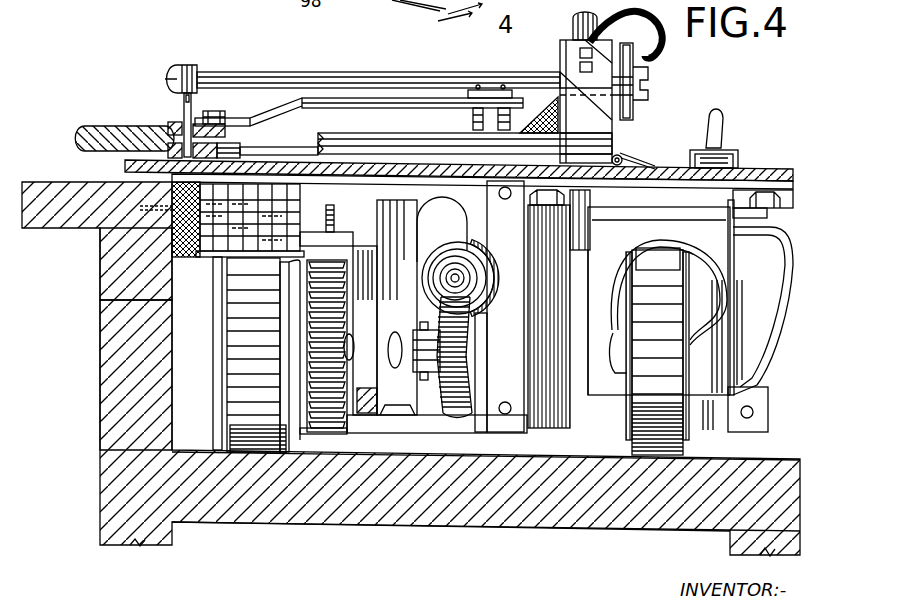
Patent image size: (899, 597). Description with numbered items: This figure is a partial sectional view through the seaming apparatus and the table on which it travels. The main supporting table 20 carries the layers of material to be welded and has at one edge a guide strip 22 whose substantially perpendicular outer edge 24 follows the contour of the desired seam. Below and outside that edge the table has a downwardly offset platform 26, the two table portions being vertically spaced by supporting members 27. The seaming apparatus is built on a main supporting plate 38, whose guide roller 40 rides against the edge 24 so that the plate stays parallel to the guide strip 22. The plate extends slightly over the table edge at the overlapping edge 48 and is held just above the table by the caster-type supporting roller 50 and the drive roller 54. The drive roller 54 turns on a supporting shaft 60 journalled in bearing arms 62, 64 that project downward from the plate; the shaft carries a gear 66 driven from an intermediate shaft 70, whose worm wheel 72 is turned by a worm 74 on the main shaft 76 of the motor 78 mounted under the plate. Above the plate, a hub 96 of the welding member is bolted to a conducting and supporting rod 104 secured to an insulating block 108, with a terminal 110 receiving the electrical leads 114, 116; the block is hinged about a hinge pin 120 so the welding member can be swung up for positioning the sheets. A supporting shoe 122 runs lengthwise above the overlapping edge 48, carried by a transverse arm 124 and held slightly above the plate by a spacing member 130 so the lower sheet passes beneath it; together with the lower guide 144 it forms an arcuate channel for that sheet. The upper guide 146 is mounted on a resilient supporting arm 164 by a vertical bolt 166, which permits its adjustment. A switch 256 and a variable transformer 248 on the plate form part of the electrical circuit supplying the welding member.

The main supporting table 20 is at (30, 183).
The guide strip 22 is at (108, 247).
The outer edge 24 is at (208, 262).
The downwardly offset platform 26 is at (222, 452).
The supporting members 27 is at (108, 335).
The main supporting plate 38 is at (756, 169).
The guide roller 40 is at (222, 262).
The overlapping edge 48 is at (183, 113).
The supporting roller 50 is at (625, 426).
The drive roller 54 is at (230, 407).
The supporting shaft 60 is at (302, 422).
The bearing arm 62 is at (218, 318).
The bearing arm 64 is at (373, 425).
The gear 66 is at (334, 430).
The intermediate shaft 70 is at (413, 425).
The worm wheel 72 is at (448, 427).
The worm 74 is at (446, 258).
The main shaft 76 is at (455, 278).
The motor 78 is at (454, 240).
The hub 96 is at (185, 78).
The conducting and supporting rod 104 is at (223, 112).
The insulating block 108 is at (614, 125).
The terminal 110 is at (644, 82).
The electrical lead 114 is at (605, 14).
The electrical lead 116 is at (658, 48).
The hinge pin 120 is at (625, 156).
The supporting shoe 122 is at (103, 127).
The transverse arm 124 is at (370, 146).
The spacing member 130 is at (440, 202).
The lower guide 144 is at (241, 150).
The upper guide 146 is at (196, 95).
The resilient supporting arm 164 is at (358, 100).
The vertical bolt 166 is at (283, 100).
The variable transformer 248 is at (629, 309).
The switch 256 is at (714, 125).